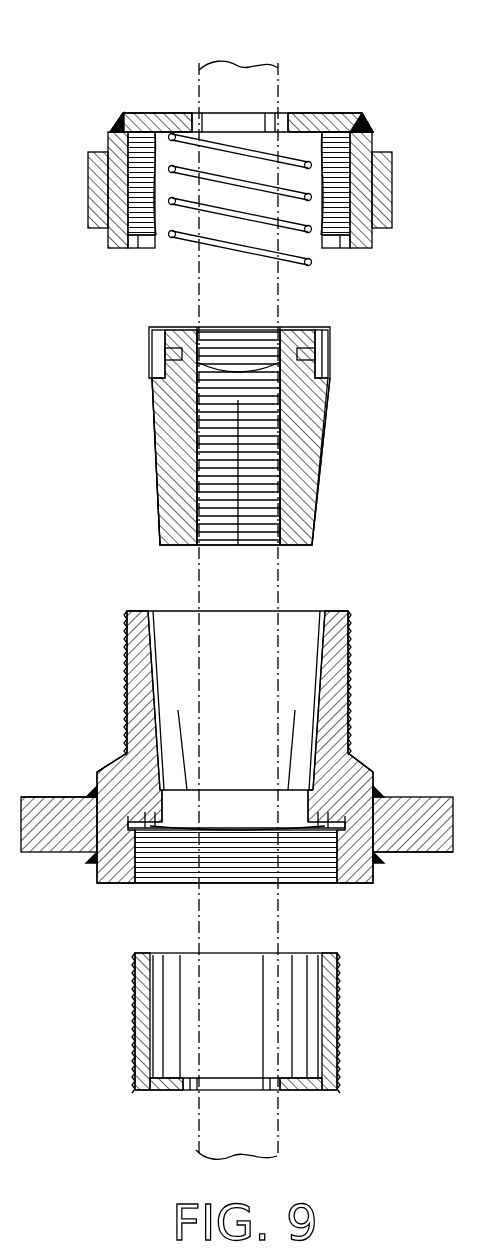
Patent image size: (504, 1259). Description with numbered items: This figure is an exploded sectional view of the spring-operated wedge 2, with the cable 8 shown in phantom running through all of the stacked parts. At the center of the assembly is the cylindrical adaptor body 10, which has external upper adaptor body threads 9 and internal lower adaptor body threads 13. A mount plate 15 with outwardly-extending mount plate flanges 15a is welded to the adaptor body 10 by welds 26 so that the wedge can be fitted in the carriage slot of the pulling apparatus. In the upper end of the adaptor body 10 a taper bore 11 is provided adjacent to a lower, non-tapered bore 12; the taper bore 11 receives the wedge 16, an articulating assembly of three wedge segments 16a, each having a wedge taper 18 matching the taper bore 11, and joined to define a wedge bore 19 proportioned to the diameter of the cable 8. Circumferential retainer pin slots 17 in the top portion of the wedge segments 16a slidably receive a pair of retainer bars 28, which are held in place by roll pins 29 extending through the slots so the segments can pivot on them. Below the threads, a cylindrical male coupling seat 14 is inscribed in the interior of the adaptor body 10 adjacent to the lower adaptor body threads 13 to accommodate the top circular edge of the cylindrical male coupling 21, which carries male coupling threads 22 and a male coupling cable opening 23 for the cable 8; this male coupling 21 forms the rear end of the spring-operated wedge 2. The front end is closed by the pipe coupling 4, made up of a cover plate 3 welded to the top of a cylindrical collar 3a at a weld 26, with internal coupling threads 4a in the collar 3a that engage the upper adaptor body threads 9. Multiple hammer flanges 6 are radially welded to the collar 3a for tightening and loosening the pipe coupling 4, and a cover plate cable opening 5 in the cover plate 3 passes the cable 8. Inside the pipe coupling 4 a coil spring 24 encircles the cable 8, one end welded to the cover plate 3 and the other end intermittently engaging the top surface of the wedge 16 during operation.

The spring-operated wedge 2 is at (114, 694).
The cover plate 3 is at (323, 130).
The cylindrical collar 3a is at (110, 238).
The pipe coupling 4 is at (380, 128).
The internal coupling threads 4a is at (333, 230).
The cover plate cable opening 5 is at (248, 125).
The hammer flanges 6 is at (97, 158).
The cable 8 is at (199, 63).
The external upper adaptor body threads 9 is at (347, 692).
The cylindrical adaptor body 10 is at (362, 760).
The taper bore 11 is at (153, 652).
The lower, non-tapered bore 12 is at (285, 808).
The internal lower adaptor body threads 13 is at (295, 855).
The cylindrical male coupling seat 14 is at (170, 826).
The mount plate 15 is at (32, 795).
The mount plate flanges 15a is at (60, 812).
The wedge 16 is at (146, 455).
The wedge segments 16a is at (178, 498).
The circumferential retainer pin slots 17 is at (163, 353).
The wedge taper 18 is at (318, 478).
The wedge bore 19 is at (228, 348).
The cylindrical male coupling 21 is at (345, 985).
The male coupling threads 22 is at (340, 1035).
The male coupling cable opening 23 is at (247, 1083).
The coil spring 24 is at (168, 181).
The welds 26 is at (95, 858).
The retainer bars 28 is at (316, 353).
The roll pins 29 is at (320, 366).